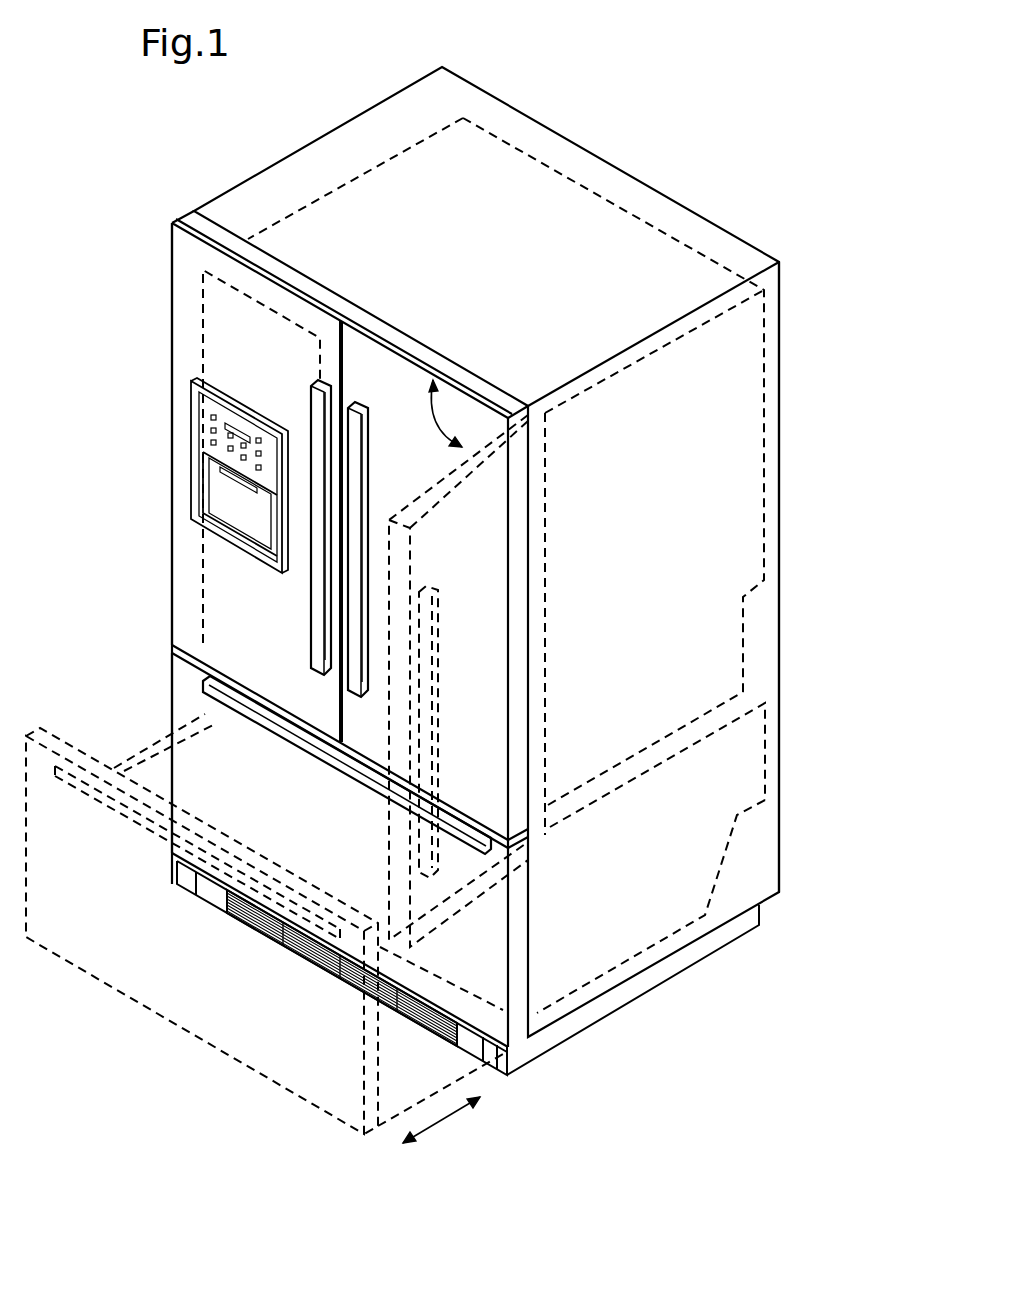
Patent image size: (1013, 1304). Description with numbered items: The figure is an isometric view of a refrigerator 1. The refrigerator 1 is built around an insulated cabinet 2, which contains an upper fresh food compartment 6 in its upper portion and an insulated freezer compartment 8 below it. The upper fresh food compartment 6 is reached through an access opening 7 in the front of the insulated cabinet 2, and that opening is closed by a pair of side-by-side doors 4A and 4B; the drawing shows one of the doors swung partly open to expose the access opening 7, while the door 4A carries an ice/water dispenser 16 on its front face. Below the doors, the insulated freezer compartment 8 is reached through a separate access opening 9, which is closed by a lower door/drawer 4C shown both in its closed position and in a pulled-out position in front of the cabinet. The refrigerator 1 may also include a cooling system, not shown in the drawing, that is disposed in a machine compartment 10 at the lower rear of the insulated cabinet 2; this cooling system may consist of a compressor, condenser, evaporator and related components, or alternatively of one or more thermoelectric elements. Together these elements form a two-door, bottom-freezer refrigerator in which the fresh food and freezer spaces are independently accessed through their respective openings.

The refrigerator 1 is at (782, 340).
The insulated cabinet 2 is at (780, 557).
The door 4A is at (185, 562).
The door 4B is at (520, 807).
The lower door/drawer 4C is at (517, 1026).
The upper fresh food compartment 6 is at (732, 427).
The access opening 7 is at (218, 325).
The insulated freezer compartment 8 is at (745, 733).
The access opening 9 is at (480, 973).
The machine compartment 10 is at (752, 858).
The ice/water dispenser 16 is at (190, 455).